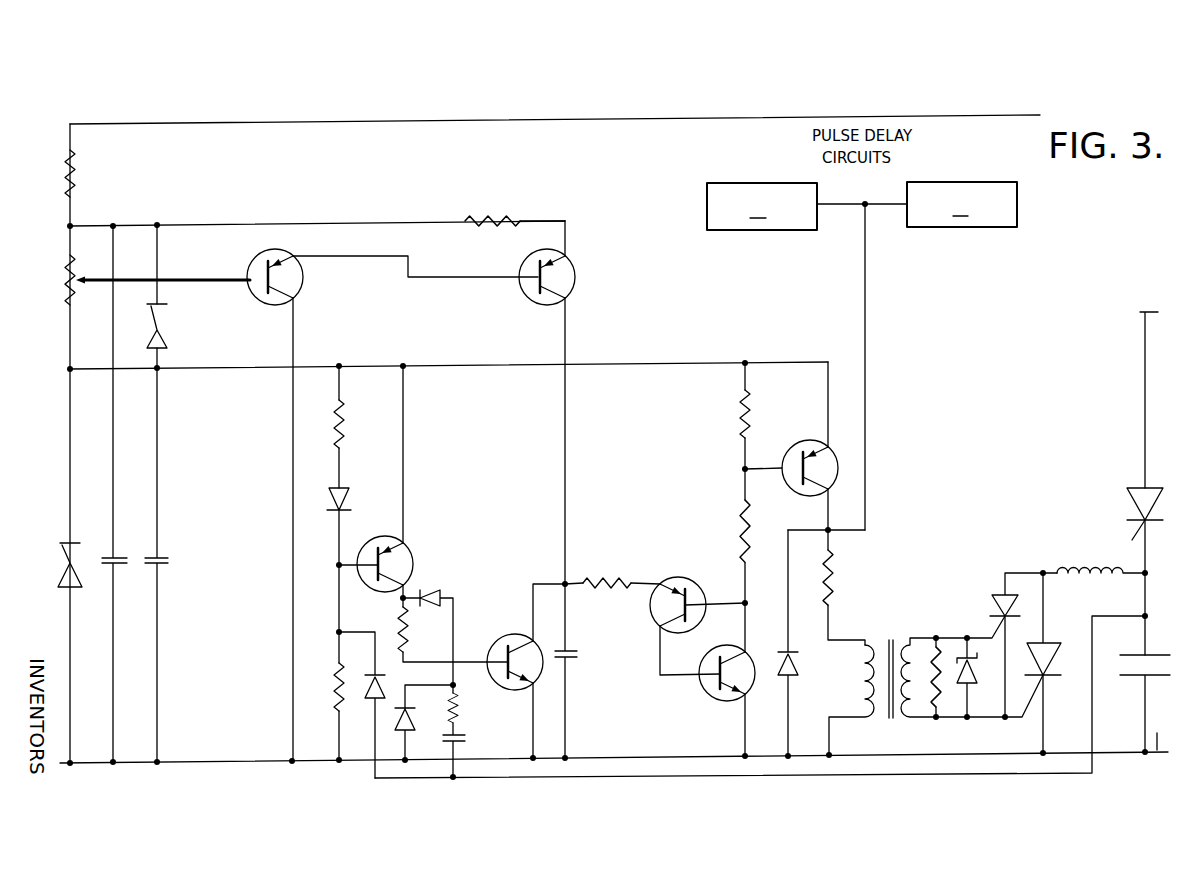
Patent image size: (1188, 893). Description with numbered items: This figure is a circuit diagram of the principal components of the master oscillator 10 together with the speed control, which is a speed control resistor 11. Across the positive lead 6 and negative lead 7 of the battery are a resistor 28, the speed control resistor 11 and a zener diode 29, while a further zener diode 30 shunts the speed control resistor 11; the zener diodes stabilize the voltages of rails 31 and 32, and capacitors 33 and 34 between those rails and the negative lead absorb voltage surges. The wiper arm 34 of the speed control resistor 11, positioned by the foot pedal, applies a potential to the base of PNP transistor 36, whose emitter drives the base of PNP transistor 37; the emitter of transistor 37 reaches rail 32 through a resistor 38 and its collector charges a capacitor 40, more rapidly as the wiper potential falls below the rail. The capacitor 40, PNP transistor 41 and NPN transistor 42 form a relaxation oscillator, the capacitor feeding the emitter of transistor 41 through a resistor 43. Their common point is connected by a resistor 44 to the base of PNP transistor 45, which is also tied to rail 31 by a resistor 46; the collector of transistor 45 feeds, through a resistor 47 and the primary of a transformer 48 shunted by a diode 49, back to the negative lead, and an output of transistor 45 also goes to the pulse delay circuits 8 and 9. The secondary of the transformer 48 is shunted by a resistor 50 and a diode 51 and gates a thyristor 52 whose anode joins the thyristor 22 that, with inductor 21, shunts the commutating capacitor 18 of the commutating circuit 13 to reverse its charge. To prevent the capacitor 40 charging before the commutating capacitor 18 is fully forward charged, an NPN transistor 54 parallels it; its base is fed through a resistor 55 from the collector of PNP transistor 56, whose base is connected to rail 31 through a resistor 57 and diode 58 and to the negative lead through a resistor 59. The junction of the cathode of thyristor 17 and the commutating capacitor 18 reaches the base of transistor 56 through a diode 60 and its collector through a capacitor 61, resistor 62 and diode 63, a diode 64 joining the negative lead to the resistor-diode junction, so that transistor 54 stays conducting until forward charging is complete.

The positive lead 6 is at (893, 113).
The negative lead 7 is at (1155, 730).
The pulse delay circuit 8 is at (793, 186).
The pulse delay circuit 9 is at (938, 182).
The master oscillator 10 is at (352, 772).
The speed control resistor 11 is at (78, 268).
The commutating circuit 13 is at (1153, 592).
The thyristor 17 is at (1133, 499).
The commutating capacitor 18 is at (1133, 681).
The inductor 21 is at (1070, 566).
The thyristor 22 is at (1052, 644).
The resistor 28 is at (78, 184).
The zener diode 29 is at (82, 578).
The zener diode 30 is at (165, 330).
The voltage rail 31 is at (95, 372).
The voltage rail 32 is at (98, 224).
The capacitor 33 is at (163, 553).
The capacitor 34 is at (100, 292).
The PNP transistor 36 is at (256, 262).
The PNP transistor 37 is at (574, 290).
The resistor 38 is at (497, 224).
The capacitor 40 is at (577, 648).
The PNP transistor 41 is at (676, 577).
The NPN transistor 42 is at (702, 692).
The resistor 43 is at (598, 580).
The resistor 44 is at (740, 517).
The PNP transistor 45 is at (797, 442).
The resistor 46 is at (738, 407).
The resistor 47 is at (840, 590).
The transformer 48 is at (904, 750).
The diode 49 is at (804, 655).
The resistor 50 is at (942, 648).
The diode 51 is at (977, 677).
The thyristor 52 is at (995, 602).
The NPN transistor 54 is at (499, 633).
The resistor 55 is at (399, 618).
The PNP transistor 56 is at (373, 536).
The resistor 57 is at (337, 414).
The diode 58 is at (334, 494).
The resistor 59 is at (338, 674).
The diode 60 is at (371, 697).
The capacitor 61 is at (468, 739).
The resistor 62 is at (458, 714).
The diode 63 is at (432, 588).
The diode 64 is at (408, 722).